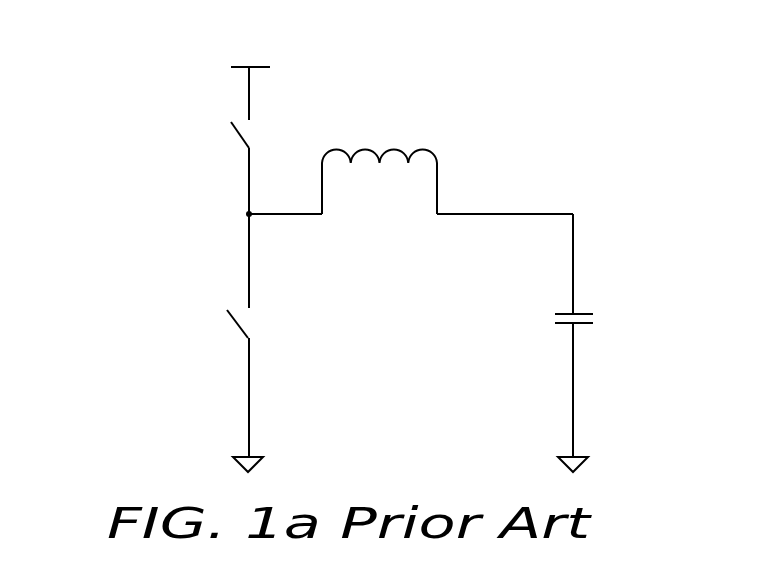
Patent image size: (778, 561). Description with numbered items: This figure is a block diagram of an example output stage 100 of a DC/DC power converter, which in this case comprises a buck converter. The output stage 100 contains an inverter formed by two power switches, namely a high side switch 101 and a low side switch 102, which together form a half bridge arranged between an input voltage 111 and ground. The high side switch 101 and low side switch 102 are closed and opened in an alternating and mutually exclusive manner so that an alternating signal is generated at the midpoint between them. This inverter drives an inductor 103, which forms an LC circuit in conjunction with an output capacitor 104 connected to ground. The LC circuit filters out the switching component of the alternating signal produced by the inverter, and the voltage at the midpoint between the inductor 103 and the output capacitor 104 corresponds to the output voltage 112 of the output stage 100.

The output stage 100 is at (152, 205).
The high side switch 101 is at (223, 150).
The low side switch 102 is at (215, 313).
The inductor 103 is at (373, 185).
The output capacitor 104 is at (603, 318).
The input voltage 111 is at (272, 58).
The output voltage 112 is at (575, 200).